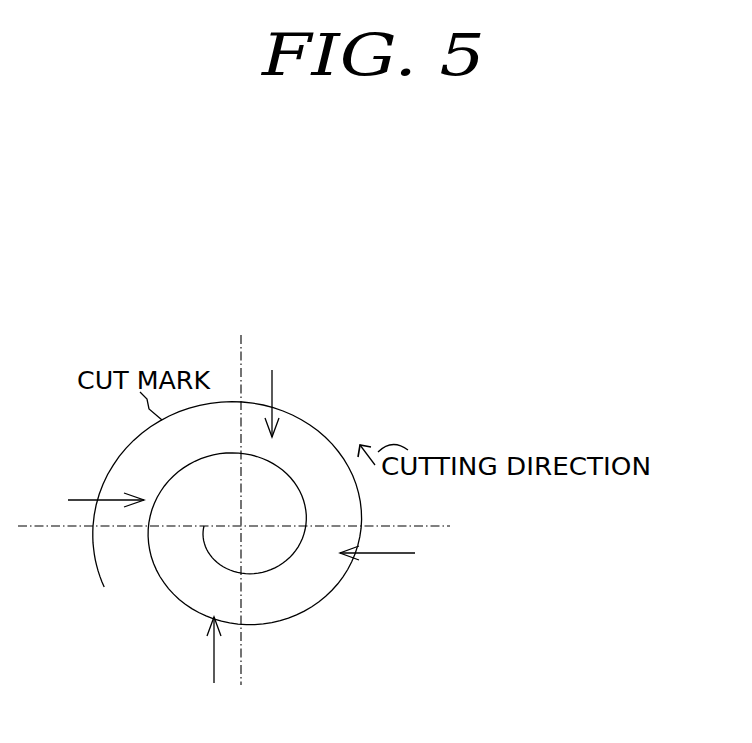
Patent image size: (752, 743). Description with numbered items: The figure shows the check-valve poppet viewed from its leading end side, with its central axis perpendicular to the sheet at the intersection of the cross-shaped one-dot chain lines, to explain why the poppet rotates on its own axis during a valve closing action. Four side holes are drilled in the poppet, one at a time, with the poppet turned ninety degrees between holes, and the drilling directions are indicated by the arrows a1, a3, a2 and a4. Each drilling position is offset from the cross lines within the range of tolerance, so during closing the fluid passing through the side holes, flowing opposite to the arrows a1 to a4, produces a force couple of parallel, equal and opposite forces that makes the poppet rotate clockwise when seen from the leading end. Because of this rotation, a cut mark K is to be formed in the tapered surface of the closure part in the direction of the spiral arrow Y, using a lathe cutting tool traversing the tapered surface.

The cut mark K is at (255, 513).
The spiral arrow Y is at (73, 556).
The arrow a1 is at (302, 401).
The arrow a2 is at (185, 650).
The arrow a3 is at (377, 579).
The arrow a4 is at (103, 476).